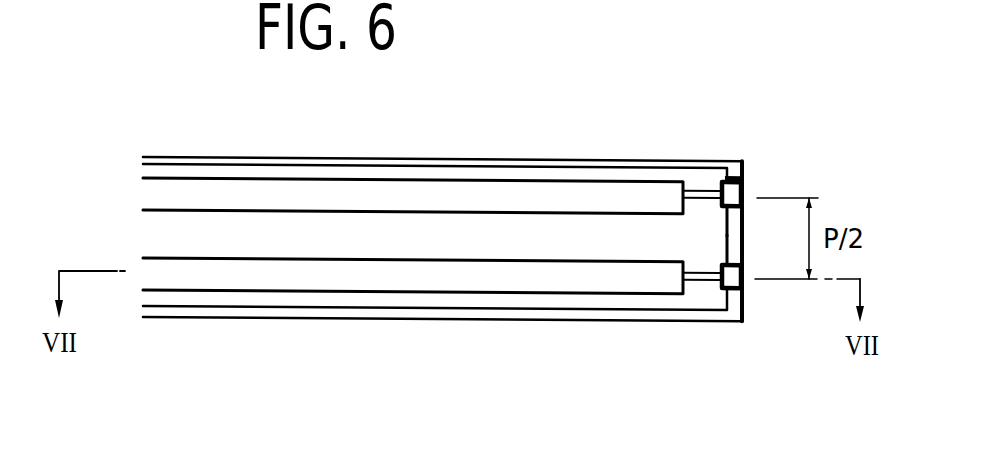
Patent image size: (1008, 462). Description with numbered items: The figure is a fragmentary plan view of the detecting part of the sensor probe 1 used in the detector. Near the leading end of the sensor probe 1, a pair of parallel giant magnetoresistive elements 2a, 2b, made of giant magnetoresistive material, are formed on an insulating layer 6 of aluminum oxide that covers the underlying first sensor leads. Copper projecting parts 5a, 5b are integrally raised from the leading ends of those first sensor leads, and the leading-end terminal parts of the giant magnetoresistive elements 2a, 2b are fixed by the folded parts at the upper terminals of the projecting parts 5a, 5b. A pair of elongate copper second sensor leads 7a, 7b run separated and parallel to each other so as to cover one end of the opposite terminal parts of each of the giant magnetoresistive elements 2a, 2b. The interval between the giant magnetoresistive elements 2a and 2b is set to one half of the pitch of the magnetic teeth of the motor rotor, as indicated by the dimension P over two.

The sensor probe 1 is at (463, 157).
The giant magnetoresistive element 2a is at (696, 200).
The giant magnetoresistive element 2b is at (703, 285).
The projecting part 5a is at (733, 193).
The projecting part 5b is at (733, 277).
The insulating layer 6 is at (222, 222).
The second sensor lead 7a is at (340, 190).
The second sensor lead 7b is at (420, 272).